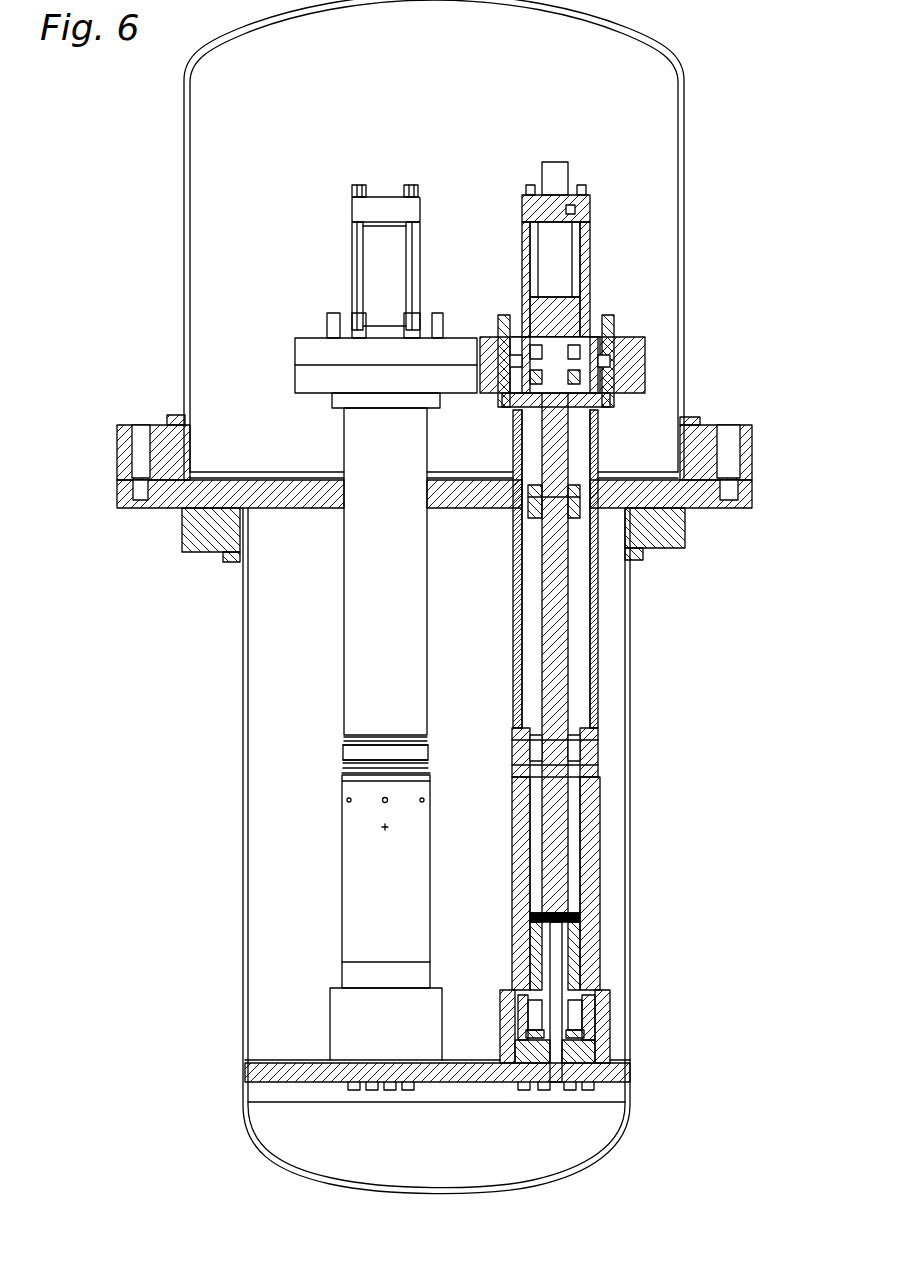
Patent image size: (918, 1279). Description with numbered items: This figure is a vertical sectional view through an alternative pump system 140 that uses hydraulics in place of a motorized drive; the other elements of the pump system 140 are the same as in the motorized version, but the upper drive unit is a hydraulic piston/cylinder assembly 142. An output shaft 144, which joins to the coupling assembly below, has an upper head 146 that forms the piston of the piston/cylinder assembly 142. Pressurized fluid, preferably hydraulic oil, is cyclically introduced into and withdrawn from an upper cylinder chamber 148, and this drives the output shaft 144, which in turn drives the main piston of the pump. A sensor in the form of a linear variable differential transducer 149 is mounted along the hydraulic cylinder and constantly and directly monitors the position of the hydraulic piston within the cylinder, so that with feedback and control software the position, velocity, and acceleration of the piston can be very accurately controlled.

The alternative pump system 140 is at (138, 218).
The hydraulic piston/cylinder assembly 142 is at (334, 253).
The output shaft 144 is at (610, 400).
The upper head 146 is at (560, 312).
The upper cylinder chamber 148 is at (560, 265).
The linear variable differential transducer (LVDT) 149 is at (540, 180).